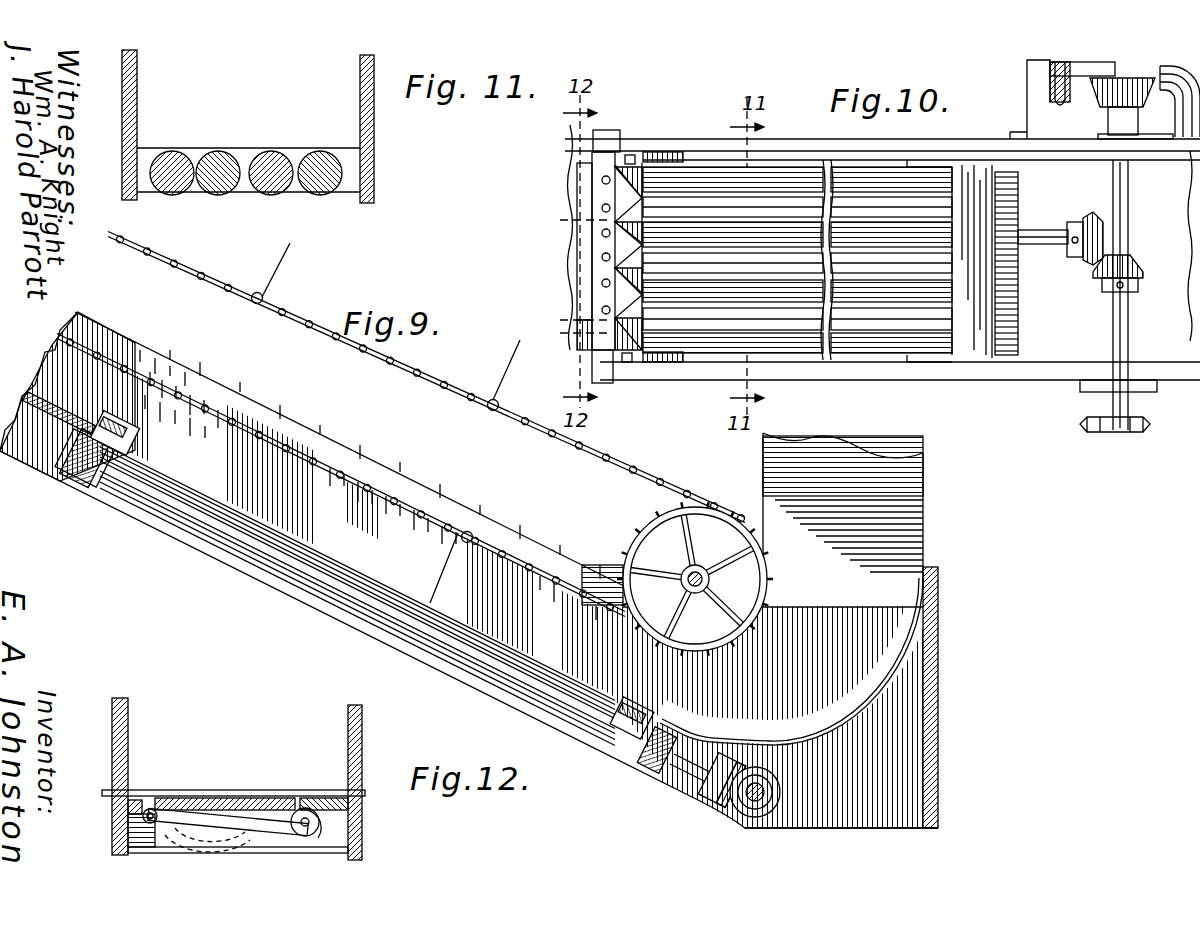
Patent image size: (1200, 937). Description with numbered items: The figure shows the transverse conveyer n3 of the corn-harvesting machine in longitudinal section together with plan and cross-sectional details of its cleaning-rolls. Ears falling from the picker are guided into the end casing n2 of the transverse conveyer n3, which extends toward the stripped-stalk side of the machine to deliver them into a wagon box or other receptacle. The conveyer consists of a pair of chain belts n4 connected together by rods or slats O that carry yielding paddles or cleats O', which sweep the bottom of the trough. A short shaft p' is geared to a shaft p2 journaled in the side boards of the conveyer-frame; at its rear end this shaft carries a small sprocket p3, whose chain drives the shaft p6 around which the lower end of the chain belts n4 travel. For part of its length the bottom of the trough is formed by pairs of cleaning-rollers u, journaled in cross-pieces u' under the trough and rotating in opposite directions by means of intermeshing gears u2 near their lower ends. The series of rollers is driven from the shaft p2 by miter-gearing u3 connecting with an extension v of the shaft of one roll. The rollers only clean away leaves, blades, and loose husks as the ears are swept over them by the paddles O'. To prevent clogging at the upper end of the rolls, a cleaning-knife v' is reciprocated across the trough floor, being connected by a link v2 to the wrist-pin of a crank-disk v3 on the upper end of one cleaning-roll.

In FIG. 9, the end casing n2 is at (902, 580).
In FIG. 11, the transverse conveyer n3 is at (137, 88).
In FIG. 9, the transverse conveyer n3 is at (440, 517).
In FIG. 12, the transverse conveyer n3 is at (128, 720).
In FIG. 9, the chain belts n4 is at (323, 463).
In FIG. 9, the rods or slats O is at (375, 439).
In FIG. 9, the yielding paddles or cleats O' is at (391, 423).
In FIG. 11, the cleaning-rollers u is at (221, 154).
In FIG. 10, the cleaning-rollers u is at (797, 265).
In FIG. 9, the cleaning-rollers u is at (357, 594).
In FIG. 11, the cross-pieces u' is at (323, 153).
In FIG. 9, the cross-pieces u' is at (372, 575).
In FIG. 10, the intermeshing gears u2 is at (1012, 213).
In FIG. 9, the intermeshing gears u2 is at (652, 772).
In FIG. 10, the miter-gearing u3 is at (1104, 257).
In FIG. 10, the shaft extension v is at (1043, 256).
In FIG. 10, the cleaning-knife v' is at (567, 251).
In FIG. 9, the cleaning-knife v' is at (65, 407).
In FIG. 12, the cleaning-knife v' is at (251, 783).
In FIG. 10, the link v2 is at (585, 258).
In FIG. 9, the link v2 is at (56, 462).
In FIG. 12, the link v2 is at (262, 832).
In FIG. 10, the crank-disk v3 is at (577, 325).
In FIG. 12, the crank-disk v3 is at (319, 828).
In FIG. 10, the short shaft p' is at (1105, 99).
In FIG. 10, the shaft p2 is at (1126, 224).
In FIG. 9, the shaft p2 is at (756, 800).
In FIG. 10, the small sprocket p3 is at (1120, 432).
In FIG. 9, the shaft p6 is at (652, 540).